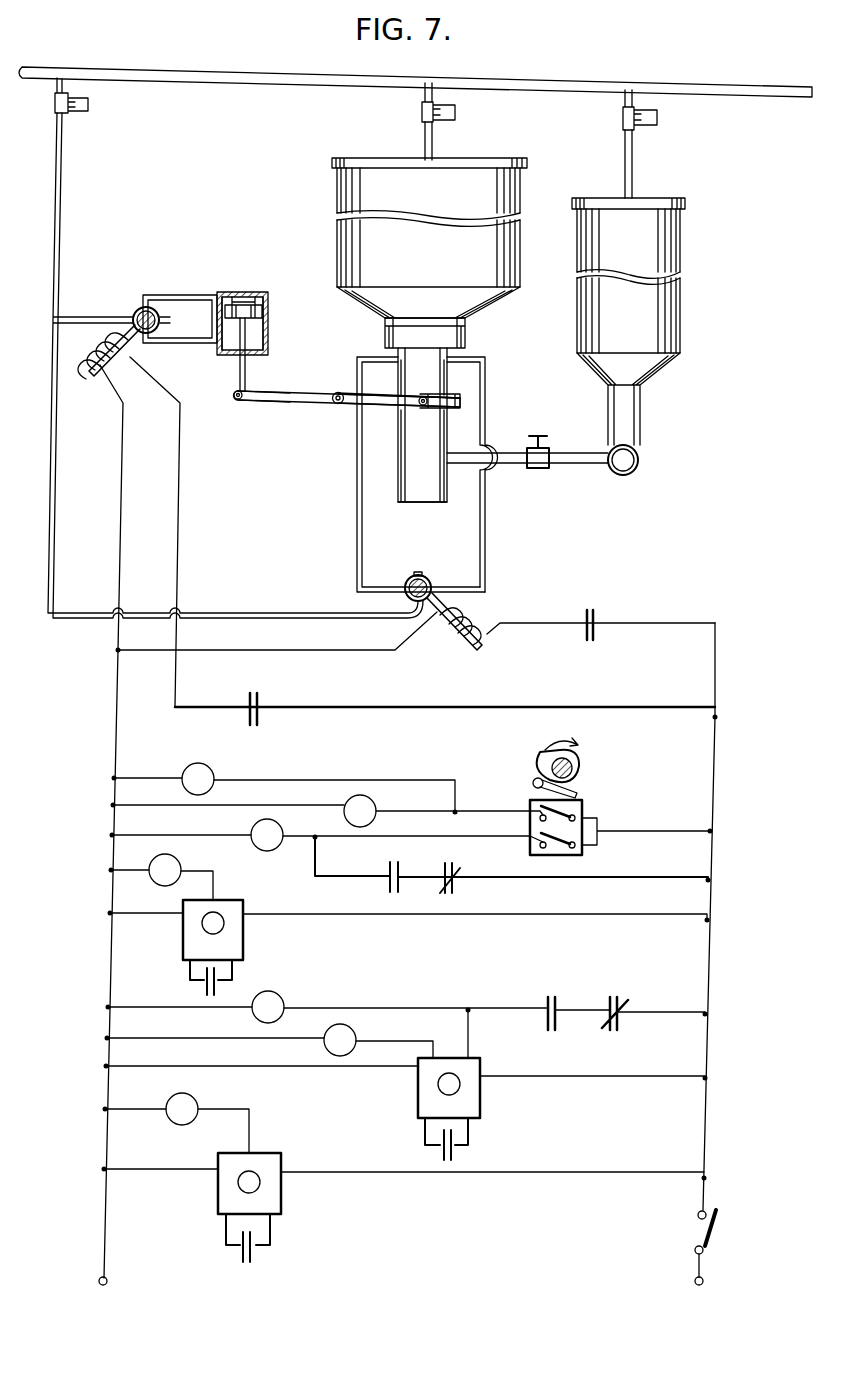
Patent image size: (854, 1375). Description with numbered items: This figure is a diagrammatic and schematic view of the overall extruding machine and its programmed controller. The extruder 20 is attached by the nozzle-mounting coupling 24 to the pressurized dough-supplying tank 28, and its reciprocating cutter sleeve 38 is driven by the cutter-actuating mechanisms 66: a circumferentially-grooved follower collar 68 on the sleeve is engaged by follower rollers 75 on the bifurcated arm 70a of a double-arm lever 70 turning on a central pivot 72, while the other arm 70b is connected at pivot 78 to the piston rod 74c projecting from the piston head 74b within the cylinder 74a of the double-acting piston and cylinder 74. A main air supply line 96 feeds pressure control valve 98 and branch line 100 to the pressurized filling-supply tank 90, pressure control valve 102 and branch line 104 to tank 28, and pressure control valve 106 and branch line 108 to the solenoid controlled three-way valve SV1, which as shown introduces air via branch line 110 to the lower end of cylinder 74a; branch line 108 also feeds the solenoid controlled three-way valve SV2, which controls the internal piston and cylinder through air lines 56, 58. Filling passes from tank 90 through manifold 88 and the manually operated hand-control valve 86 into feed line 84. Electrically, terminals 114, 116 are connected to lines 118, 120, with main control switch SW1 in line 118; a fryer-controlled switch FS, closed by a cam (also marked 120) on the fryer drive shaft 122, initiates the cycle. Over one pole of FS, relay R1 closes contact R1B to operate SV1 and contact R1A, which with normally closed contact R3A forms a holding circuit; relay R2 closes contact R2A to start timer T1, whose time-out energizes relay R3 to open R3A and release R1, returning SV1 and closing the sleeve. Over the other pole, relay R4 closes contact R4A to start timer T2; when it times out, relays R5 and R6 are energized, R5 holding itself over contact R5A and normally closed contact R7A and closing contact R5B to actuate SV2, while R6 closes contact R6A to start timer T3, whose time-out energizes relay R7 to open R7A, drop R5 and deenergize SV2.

The main air supply line 96 is at (690, 90).
The pressure control valve 106 is at (68, 112).
The branch line 108 is at (62, 186).
The pressure control valve 102 is at (422, 112).
The branch line 104 is at (424, 138).
The pressurized dough-supplying tank 28 is at (346, 180).
The nozzle-mounting coupling 24 is at (467, 342).
The extruder 20 is at (395, 463).
The reciprocating cutter sleeve 38 is at (421, 500).
The air line 56 is at (357, 540).
The air line 58 is at (485, 530).
The double-arm lever 70 is at (297, 411).
The lever arm 70a is at (356, 397).
The lever arm 70b is at (263, 404).
The cutter-actuating mechanisms 66 is at (289, 390).
The central pivot 72 is at (337, 405).
The pivot 78 is at (235, 398).
The follower rollers 75 is at (422, 407).
The follower collar 68 is at (457, 411).
The double-acting piston and cylinder 74 is at (244, 286).
The cylinder 74a is at (268, 330).
The piston head 74b is at (264, 312).
The piston rod 74c is at (240, 377).
The branch line 110 is at (170, 344).
The solenoid controlled three way valve SV1 is at (129, 507).
The pressurized filling-supply tank 90 is at (670, 330).
The manifold 88 is at (640, 464).
The feed line 84 is at (509, 466).
The hand-control valve 86 is at (540, 468).
The solenoid controlled three way valve SV2 is at (458, 650).
The relay contact R5B is at (594, 620).
The relay contact R1B is at (258, 705).
The terminal 116 is at (101, 1273).
The line 118 is at (712, 960).
The line 120 is at (545, 757).
The drive shaft 122 is at (574, 768).
The fryer-controlled switch FS is at (585, 813).
The relay R4 is at (284, 788).
The relay R2 is at (328, 811).
The relay R1 is at (327, 835).
The relay R3 is at (162, 877).
The timer T1 is at (408, 930).
The relay contact R2A is at (205, 983).
The relay contact R1A is at (390, 883).
The relay contact R3A is at (455, 887).
The relay R5 is at (406, 1024).
The relay contact R5A is at (548, 996).
The relay contact R7A is at (618, 1005).
The relay R6 is at (270, 1040).
The timer T2 is at (405, 1088).
The relay contact R4A is at (453, 1152).
The relay R7 is at (177, 1123).
The timer T3 is at (404, 1183).
The relay contact R6A is at (250, 1262).
The main control switch SW1 is at (717, 1228).
The terminal 114 is at (704, 1286).
The pressure control valve 98 is at (622, 115).
The branch line 100 is at (626, 153).